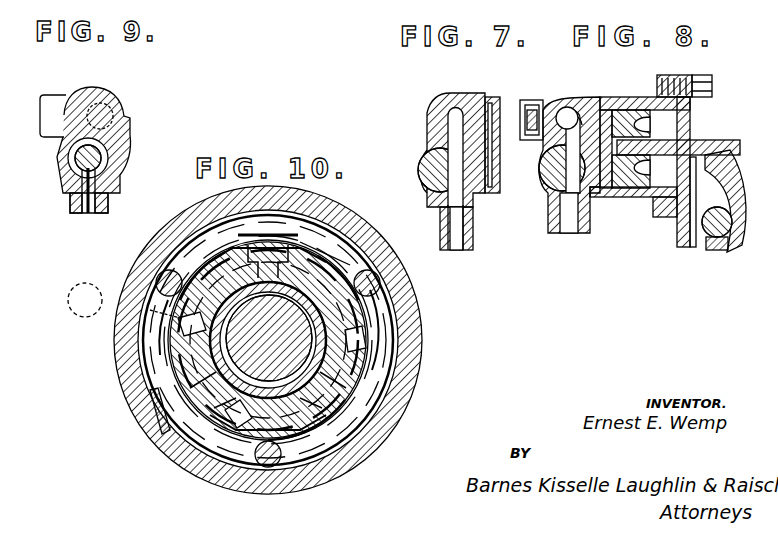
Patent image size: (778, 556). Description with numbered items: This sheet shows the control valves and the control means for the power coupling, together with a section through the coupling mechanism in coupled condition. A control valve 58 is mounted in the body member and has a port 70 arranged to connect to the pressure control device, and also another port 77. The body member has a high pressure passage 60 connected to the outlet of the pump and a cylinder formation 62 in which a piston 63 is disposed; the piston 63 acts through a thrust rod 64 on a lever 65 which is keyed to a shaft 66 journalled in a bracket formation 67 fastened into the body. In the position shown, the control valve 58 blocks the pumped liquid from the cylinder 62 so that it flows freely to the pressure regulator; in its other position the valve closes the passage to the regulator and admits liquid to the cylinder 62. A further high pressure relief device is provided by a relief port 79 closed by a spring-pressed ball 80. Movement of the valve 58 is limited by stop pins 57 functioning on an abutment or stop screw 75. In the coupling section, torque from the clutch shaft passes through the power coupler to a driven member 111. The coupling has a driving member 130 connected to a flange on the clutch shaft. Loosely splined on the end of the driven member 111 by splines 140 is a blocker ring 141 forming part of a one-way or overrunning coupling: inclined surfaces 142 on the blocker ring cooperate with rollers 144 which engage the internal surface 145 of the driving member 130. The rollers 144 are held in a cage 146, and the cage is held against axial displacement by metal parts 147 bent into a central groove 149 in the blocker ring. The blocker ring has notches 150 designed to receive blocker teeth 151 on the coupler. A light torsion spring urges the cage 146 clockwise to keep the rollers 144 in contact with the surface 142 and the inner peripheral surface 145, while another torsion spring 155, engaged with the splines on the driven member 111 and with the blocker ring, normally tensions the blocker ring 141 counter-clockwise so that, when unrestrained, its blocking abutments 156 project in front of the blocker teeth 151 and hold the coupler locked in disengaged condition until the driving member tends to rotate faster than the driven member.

In FIG. 9, the stop pins 57 is at (76, 163).
In FIG. 9, the control valve 58 is at (95, 150).
In FIG. 7, the control valve 58 is at (432, 166).
In FIG. 8, the control valve 58 is at (556, 170).
In FIG. 9, the stop screw 75 is at (108, 208).
In FIG. 7, the cylinder formation 62 is at (505, 84).
In FIG. 8, the cylinder formation 62 is at (636, 205).
In FIG. 7, the port 70 is at (456, 185).
In FIG. 8, the relief port 79 is at (560, 118).
In FIG. 8, the spring-pressed ball 80 is at (546, 122).
In FIG. 8, the high pressure passage 60 is at (578, 112).
In FIG. 8, the piston 63 is at (612, 116).
In FIG. 8, the thrust rod 64 is at (706, 143).
In FIG. 8, the lever 65 is at (744, 180).
In FIG. 8, the shaft 66 is at (728, 245).
In FIG. 8, the bracket formation 67 is at (690, 88).
In FIG. 8, the port 77 is at (595, 205).
In FIG. 10, the driven member 111 is at (327, 404).
In FIG. 10, the driving member 130 is at (408, 344).
In FIG. 10, the splines 140 is at (333, 364).
In FIG. 10, the blocker ring 141 is at (200, 470).
In FIG. 10, the inclined surfaces 142 is at (392, 316).
In FIG. 10, the rollers 144 is at (385, 300).
In FIG. 10, the internal surface 145 is at (150, 394).
In FIG. 10, the cage 146 is at (170, 332).
In FIG. 10, the metal parts 147 is at (340, 236).
In FIG. 10, the central groove 149 is at (153, 425).
In FIG. 10, the notches 150 is at (160, 270).
In FIG. 10, the blocker teeth 151 is at (380, 353).
In FIG. 10, the torsion spring 155 is at (122, 318).
In FIG. 10, the blocking abutments 156 is at (308, 242).